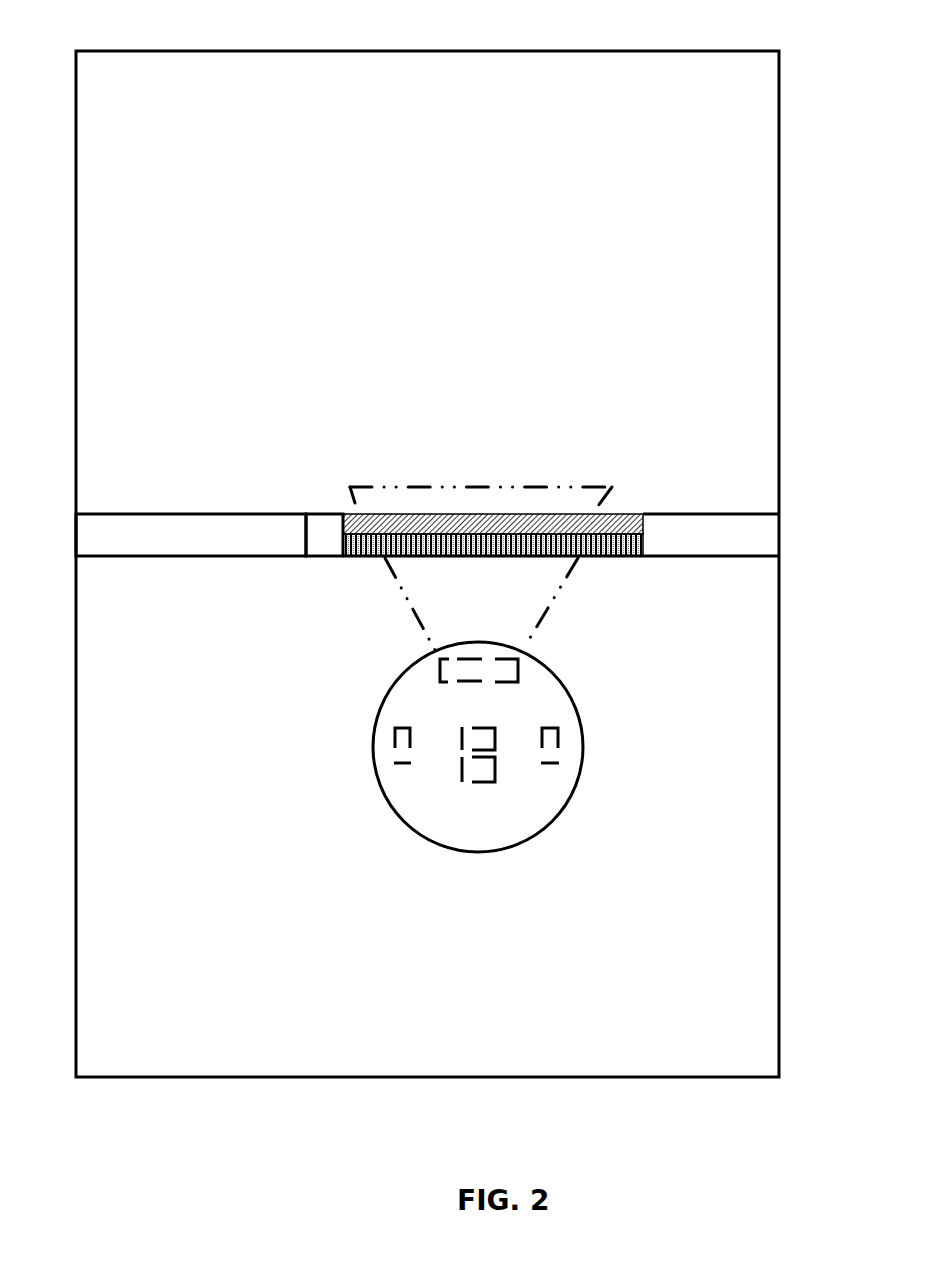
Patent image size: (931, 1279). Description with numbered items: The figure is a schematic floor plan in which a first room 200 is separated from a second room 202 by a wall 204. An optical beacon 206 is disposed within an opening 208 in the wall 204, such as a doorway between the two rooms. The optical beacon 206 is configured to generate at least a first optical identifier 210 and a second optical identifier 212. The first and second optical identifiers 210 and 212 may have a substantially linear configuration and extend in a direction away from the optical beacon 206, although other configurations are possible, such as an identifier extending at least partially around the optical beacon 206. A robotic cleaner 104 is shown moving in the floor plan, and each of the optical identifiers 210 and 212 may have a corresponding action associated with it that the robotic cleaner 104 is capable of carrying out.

The first room 200 is at (439, 575).
The second room 202 is at (760, 1066).
The wall 204 is at (232, 513).
The optical beacon 206 is at (322, 513).
The opening 208 is at (656, 460).
The first optical identifier 210 is at (362, 557).
The second optical identifier 212 is at (455, 515).
The robotic cleaner 104 is at (608, 663).